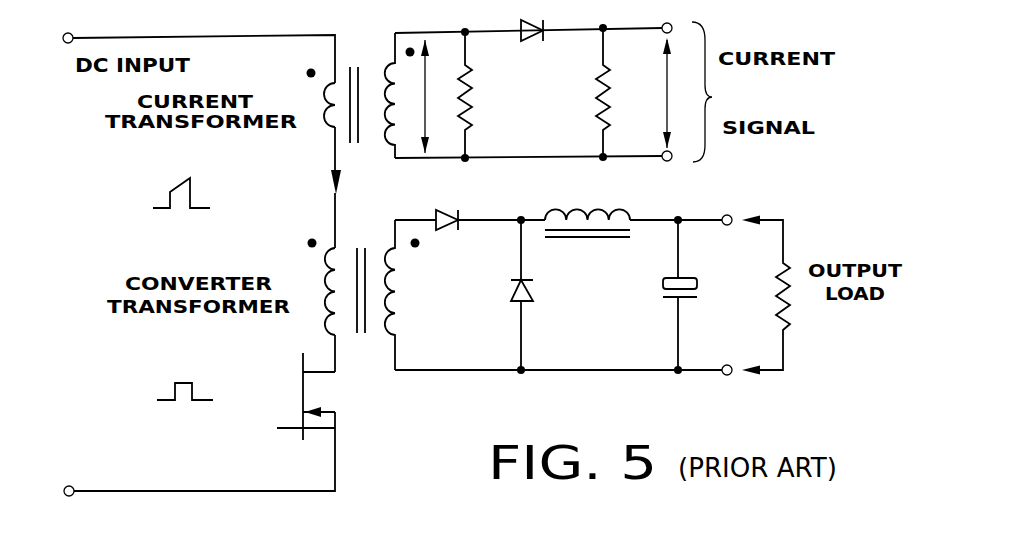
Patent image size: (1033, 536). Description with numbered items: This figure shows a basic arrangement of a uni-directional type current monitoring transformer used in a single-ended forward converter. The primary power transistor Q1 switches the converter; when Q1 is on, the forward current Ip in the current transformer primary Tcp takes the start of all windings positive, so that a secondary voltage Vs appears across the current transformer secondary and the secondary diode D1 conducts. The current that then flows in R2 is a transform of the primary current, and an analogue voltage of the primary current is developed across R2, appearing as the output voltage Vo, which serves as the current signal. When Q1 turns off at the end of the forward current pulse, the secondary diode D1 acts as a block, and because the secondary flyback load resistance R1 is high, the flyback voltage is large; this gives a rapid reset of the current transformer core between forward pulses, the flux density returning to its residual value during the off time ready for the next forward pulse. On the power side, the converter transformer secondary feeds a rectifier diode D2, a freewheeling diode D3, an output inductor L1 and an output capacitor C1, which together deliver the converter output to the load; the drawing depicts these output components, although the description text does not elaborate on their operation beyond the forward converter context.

The current transformer primary Tcp is at (325, 98).
The primary current Ip is at (323, 184).
The secondary voltage Vs is at (426, 96).
The secondary flyback load resistance R1 is at (486, 95).
The resistor R2 is at (581, 92).
The secondary diode D1 is at (535, 20).
The output voltage (current signal) Vo is at (665, 93).
The rectifier diode D2 is at (450, 239).
The freewheeling diode D3 is at (538, 295).
The output inductor L1 is at (587, 208).
The output capacitor C1 is at (691, 295).
The primary power transistor Q1 is at (315, 396).